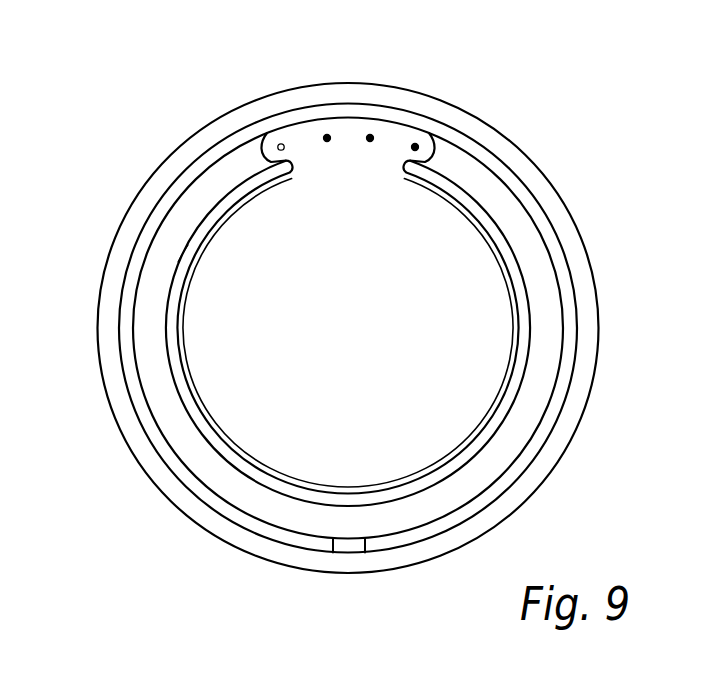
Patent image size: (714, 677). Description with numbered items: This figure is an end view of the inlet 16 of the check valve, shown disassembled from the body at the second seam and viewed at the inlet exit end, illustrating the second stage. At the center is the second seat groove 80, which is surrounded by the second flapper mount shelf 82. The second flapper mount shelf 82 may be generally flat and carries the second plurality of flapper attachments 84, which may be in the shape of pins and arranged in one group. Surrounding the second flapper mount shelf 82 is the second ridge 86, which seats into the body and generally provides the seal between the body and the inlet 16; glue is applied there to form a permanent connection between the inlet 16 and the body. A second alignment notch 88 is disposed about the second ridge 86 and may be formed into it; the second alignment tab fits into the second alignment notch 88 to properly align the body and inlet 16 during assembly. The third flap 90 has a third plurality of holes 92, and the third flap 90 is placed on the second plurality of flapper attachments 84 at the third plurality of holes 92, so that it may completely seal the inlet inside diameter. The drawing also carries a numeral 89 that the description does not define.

The housing 16 is at (168, 171).
The snap ring 80 is at (255, 180).
The groove wall 82 is at (248, 157).
The holes 84 is at (324, 138).
The flange 86 is at (445, 132).
The tab 88 is at (348, 547).
The lip 89 is at (200, 274).
The groove 90 is at (217, 247).
The holes 92 is at (373, 138).